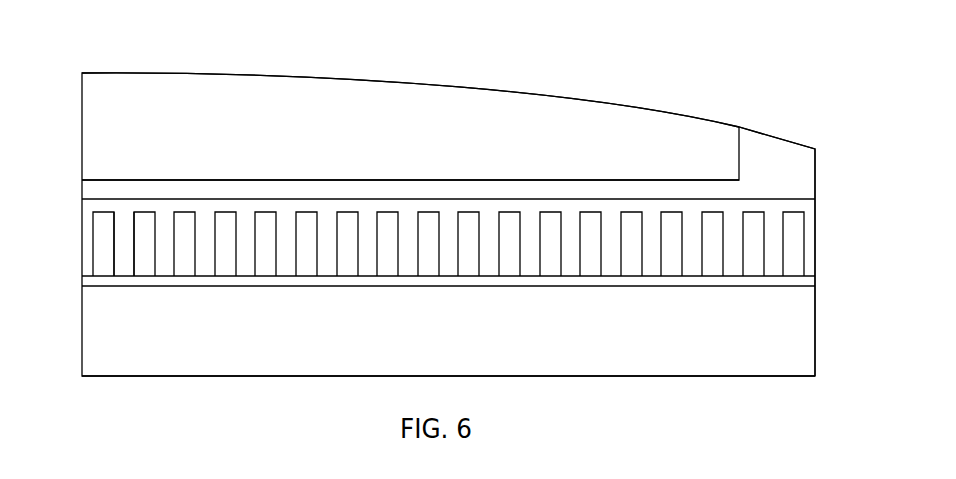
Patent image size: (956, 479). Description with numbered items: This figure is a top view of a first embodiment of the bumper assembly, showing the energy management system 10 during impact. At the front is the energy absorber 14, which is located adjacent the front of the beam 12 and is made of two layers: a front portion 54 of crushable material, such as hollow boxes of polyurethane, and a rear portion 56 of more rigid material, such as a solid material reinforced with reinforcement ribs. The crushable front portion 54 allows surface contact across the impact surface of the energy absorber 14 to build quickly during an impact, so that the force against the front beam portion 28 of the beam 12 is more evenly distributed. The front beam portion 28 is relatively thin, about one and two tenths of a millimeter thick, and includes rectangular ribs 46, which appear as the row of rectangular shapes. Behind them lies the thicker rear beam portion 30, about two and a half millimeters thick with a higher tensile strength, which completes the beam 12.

The energy management system 10 is at (622, 86).
The longitudinally extending beam 12 is at (99, 277).
The energy absorber 14 is at (817, 196).
The front beam portion 28 is at (290, 262).
The rear beam portion 30 is at (457, 334).
The rectangular ribs 46 is at (145, 262).
The front portion 54 is at (90, 111).
The rear portion 56 is at (85, 191).